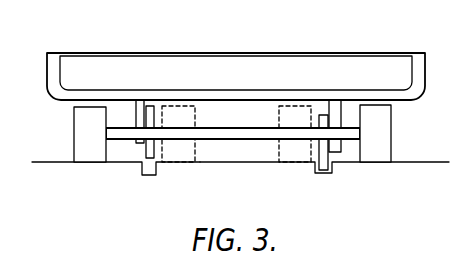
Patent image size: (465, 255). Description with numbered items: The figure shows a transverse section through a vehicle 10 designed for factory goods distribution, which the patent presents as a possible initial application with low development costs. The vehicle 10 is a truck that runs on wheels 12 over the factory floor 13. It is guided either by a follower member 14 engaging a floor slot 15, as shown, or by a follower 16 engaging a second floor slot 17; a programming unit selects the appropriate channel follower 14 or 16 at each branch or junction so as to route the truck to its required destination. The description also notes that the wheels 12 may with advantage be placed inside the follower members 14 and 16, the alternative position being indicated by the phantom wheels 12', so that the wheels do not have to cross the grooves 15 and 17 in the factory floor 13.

The vehicle 10 is at (235, 62).
The wheels 12 is at (233, 133).
The wheels (alternative position) 12' is at (238, 110).
The factory floor 13 is at (228, 192).
The follower member 14 is at (322, 143).
The floor slot 15 is at (332, 170).
The follower 16 is at (143, 143).
The floor slot 17 is at (157, 174).